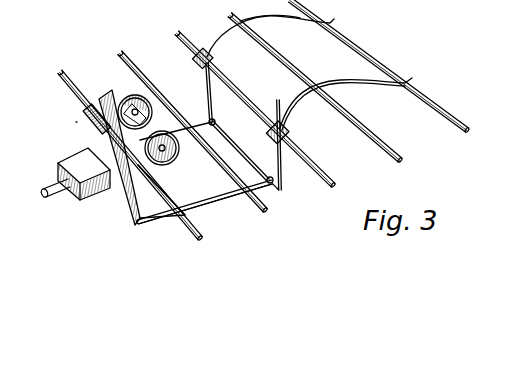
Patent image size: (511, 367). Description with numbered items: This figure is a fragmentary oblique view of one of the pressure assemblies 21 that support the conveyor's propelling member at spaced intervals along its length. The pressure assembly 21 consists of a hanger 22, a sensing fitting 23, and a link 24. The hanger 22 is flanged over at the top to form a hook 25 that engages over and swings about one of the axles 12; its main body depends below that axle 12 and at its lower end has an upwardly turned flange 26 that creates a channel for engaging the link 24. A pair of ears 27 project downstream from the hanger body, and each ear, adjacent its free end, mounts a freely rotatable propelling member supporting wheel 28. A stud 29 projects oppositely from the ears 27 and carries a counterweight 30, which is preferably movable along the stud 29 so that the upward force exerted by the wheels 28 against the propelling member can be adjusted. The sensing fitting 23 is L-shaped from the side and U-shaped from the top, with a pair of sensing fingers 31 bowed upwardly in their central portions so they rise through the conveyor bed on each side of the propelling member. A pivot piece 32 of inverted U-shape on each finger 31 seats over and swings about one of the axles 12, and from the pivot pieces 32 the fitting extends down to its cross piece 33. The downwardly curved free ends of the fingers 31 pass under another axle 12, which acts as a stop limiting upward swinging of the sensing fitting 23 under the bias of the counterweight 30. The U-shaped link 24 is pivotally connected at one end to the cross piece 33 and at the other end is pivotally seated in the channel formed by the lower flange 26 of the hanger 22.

The axle 12 is at (204, 238).
The pressure assembly 21 is at (76, 122).
The hanger 22 is at (123, 189).
The sensing fitting 23 is at (366, 88).
The link 24 is at (200, 206).
The hook 25 is at (84, 114).
The upwardly turned flange 26 is at (144, 215).
The ears 27 is at (120, 119).
The propelling member supporting wheel 28 is at (178, 128).
The stud 29 is at (52, 188).
The counterweight 30 is at (85, 152).
The sensing fingers 31 is at (350, 77).
The pivot pieces 32 is at (277, 120).
The cross piece 33 is at (243, 153).